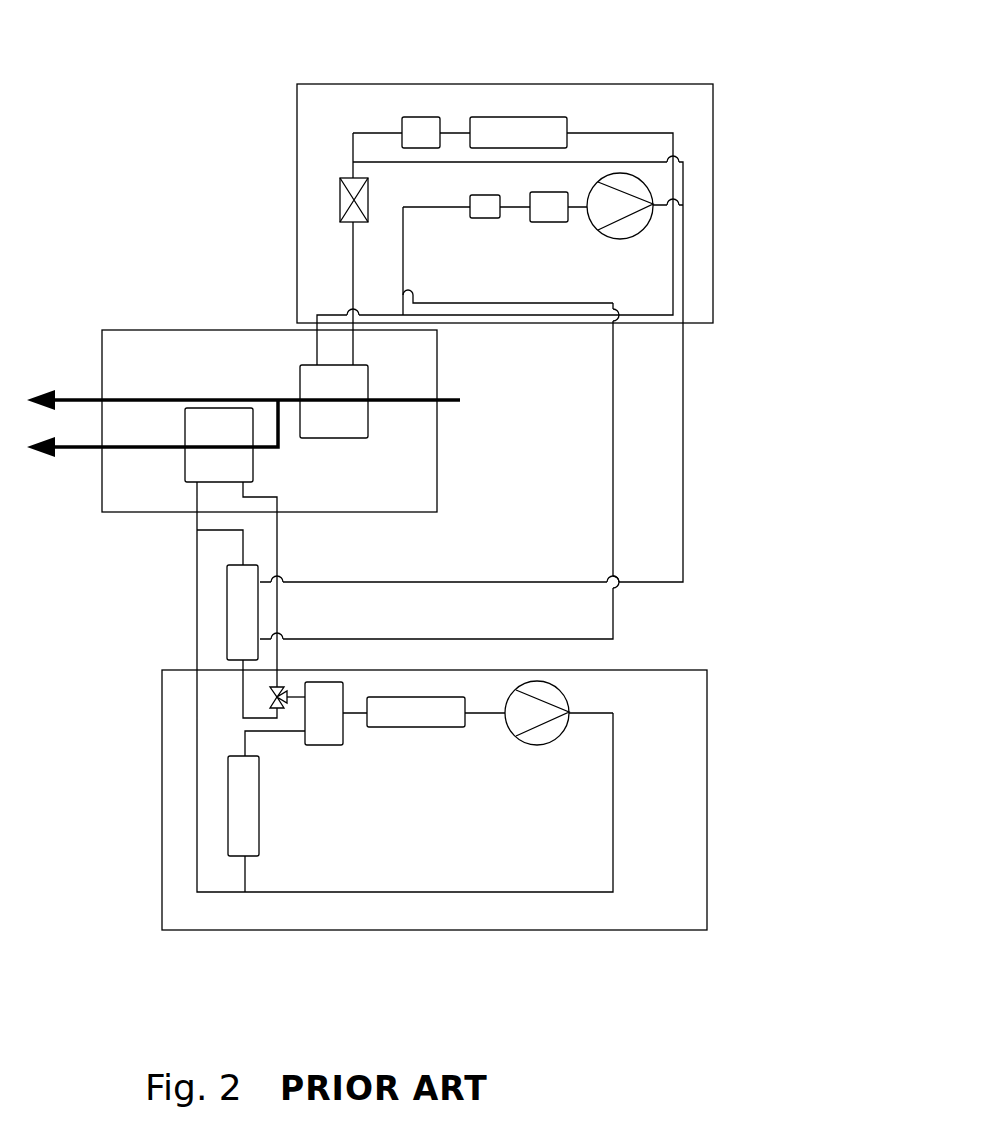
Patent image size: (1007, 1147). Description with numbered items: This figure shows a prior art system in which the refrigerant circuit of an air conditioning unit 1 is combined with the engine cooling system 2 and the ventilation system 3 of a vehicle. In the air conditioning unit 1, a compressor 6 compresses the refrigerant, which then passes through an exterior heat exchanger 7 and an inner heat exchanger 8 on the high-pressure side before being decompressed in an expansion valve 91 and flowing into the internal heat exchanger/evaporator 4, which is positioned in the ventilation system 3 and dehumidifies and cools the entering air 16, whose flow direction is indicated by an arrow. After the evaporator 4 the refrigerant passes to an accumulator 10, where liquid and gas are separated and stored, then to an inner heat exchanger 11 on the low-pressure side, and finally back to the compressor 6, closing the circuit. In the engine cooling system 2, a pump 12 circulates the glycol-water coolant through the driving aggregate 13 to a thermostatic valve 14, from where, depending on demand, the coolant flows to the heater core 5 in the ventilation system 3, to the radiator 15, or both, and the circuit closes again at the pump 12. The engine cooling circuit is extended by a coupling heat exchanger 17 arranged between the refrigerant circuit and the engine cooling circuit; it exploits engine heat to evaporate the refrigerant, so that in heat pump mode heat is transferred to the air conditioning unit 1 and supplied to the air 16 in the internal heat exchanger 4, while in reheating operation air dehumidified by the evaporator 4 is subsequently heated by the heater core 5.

The air conditioning unit 1 is at (683, 113).
The engine cooling system 2 is at (470, 919).
The ventilation system 3 is at (425, 464).
The internal heat exchanger/evaporator 4 is at (305, 372).
The heater core 5 is at (205, 424).
The compressor 6 is at (625, 215).
The exterior heat exchanger 7 is at (522, 131).
The inner heat exchanger 8 is at (422, 139).
The expansion valve 91 is at (352, 198).
The accumulator 10 is at (487, 217).
The inner heat exchanger 11 is at (550, 220).
The pump 12 is at (555, 703).
The driving aggregate 13 is at (414, 727).
The thermostatic valve 14 is at (321, 718).
The radiator 15 is at (248, 797).
The air 16 is at (452, 396).
The coupling heat exchanger 17 is at (258, 612).